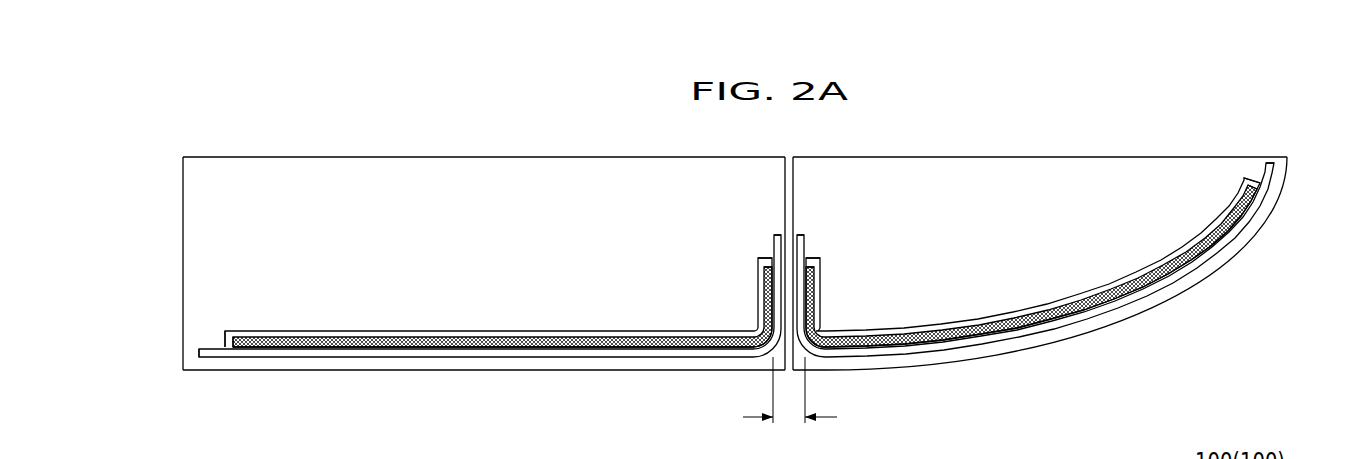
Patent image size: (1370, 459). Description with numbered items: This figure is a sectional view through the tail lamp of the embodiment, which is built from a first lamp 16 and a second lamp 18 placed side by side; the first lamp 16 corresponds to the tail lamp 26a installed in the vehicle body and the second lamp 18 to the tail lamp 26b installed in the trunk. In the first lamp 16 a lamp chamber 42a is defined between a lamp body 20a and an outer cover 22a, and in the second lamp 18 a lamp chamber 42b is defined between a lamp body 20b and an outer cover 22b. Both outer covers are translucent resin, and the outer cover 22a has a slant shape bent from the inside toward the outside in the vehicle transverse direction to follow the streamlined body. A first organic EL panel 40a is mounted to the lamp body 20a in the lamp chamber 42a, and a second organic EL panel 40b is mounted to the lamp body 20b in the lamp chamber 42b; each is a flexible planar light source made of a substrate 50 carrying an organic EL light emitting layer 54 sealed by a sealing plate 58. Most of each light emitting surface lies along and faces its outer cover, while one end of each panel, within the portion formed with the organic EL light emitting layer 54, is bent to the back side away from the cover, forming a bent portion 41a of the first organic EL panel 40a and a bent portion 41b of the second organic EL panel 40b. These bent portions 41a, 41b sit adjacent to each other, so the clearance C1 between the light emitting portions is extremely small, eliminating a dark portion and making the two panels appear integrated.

The first lamp 16 is at (1077, 140).
The second lamp 18 is at (516, 145).
The lamp body 20a is at (983, 158).
The lamp body 20b is at (600, 158).
The outer cover 22a is at (1170, 300).
The outer cover 22b is at (277, 372).
The tail lamp 26a is at (1155, 141).
The tail lamp 26b is at (414, 146).
The first organic EL panel 40a is at (923, 353).
The second organic EL panel 40b is at (608, 357).
The bent portion 41a is at (803, 350).
The bent portion 41b is at (776, 350).
The lamp chamber 42a is at (990, 220).
The lamp chamber 42b is at (392, 223).
The substrate 50 is at (558, 357).
The organic EL light emitting layer 54 is at (528, 349).
The sealing plate 58 is at (496, 342).
The clearance C1 is at (790, 402).